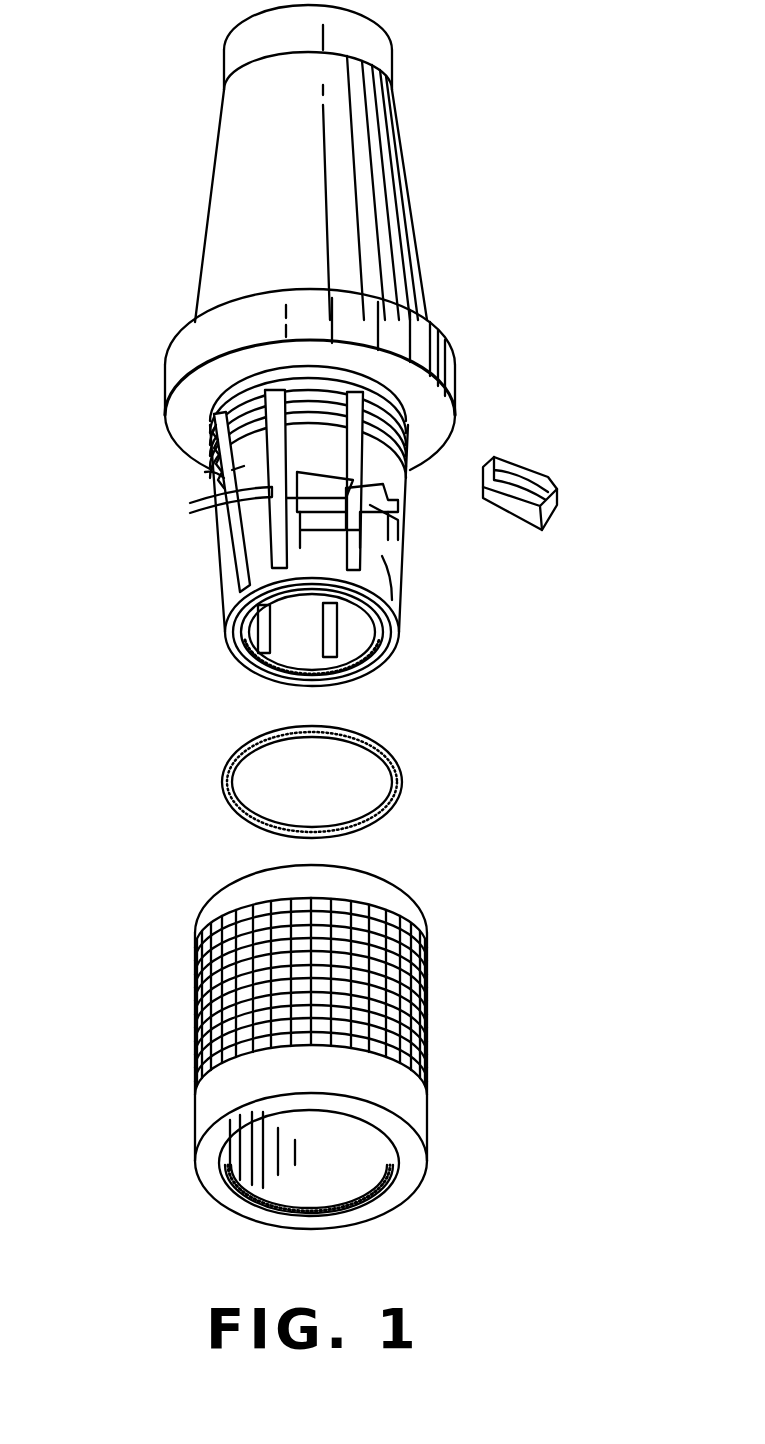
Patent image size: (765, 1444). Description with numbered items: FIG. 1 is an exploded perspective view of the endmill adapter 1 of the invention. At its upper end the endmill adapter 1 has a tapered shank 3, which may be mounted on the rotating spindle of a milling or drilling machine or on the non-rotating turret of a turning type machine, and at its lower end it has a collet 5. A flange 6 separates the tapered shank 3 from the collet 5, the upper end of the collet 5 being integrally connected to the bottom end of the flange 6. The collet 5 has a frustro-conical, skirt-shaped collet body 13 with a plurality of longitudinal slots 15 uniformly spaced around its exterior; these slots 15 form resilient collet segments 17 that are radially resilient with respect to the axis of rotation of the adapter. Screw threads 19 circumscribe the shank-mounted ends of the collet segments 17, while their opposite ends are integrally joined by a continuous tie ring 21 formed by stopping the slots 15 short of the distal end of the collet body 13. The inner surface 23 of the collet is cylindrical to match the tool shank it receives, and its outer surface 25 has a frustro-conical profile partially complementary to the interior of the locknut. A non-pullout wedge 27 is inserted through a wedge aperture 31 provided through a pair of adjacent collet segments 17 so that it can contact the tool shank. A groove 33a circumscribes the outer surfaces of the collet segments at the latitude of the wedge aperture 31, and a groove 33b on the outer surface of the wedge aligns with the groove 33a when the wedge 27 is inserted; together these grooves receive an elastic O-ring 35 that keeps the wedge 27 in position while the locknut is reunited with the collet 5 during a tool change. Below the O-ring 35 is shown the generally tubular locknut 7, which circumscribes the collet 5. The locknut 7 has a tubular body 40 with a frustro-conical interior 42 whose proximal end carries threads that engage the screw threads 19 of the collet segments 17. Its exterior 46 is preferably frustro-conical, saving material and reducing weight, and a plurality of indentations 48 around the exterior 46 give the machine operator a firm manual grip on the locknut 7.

The endmill adapter 1 is at (186, 302).
The tapered shank 3 is at (221, 225).
The collet 5 is at (222, 589).
The flange 6 is at (428, 345).
The locknut 7 is at (172, 1107).
The collet body 13 is at (403, 496).
The longitudinal slots 15 is at (385, 590).
The resilient collet segments 17 is at (232, 612).
The screw threads 19 is at (228, 420).
The tie ring 21 is at (390, 605).
The inner surface 23 is at (286, 618).
The outer surface 25 is at (222, 560).
The non-pullout wedge 27 is at (512, 460).
The wedge aperture 31 is at (358, 515).
The groove 33a is at (222, 495).
The groove 33b is at (545, 480).
The elastic O-ring 35 is at (228, 800).
The tubular body 40 is at (194, 1009).
The frustro-conical interior 42 is at (345, 1160).
The exterior 46 is at (410, 1108).
The indentations 48 is at (343, 930).